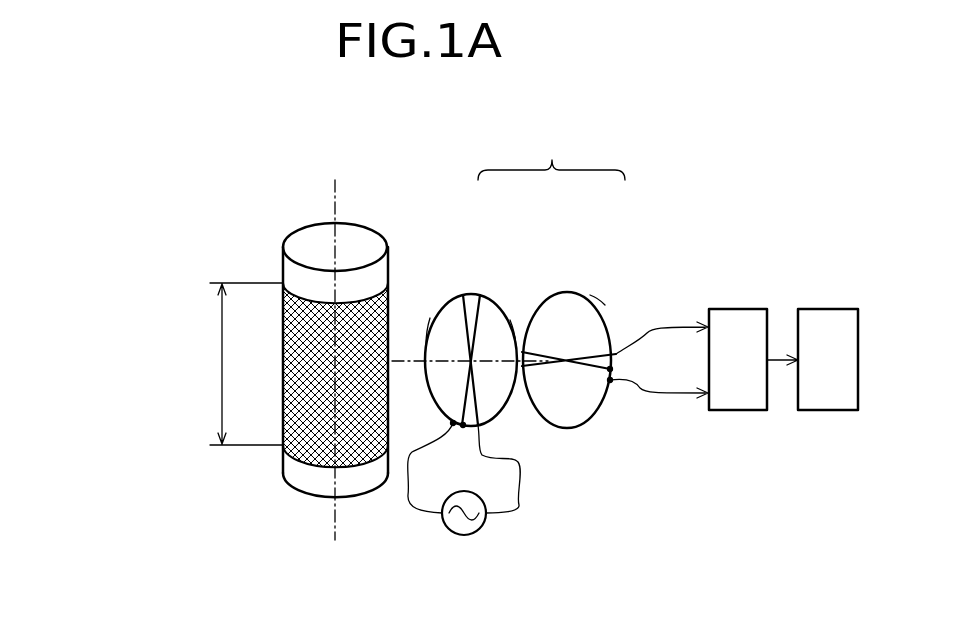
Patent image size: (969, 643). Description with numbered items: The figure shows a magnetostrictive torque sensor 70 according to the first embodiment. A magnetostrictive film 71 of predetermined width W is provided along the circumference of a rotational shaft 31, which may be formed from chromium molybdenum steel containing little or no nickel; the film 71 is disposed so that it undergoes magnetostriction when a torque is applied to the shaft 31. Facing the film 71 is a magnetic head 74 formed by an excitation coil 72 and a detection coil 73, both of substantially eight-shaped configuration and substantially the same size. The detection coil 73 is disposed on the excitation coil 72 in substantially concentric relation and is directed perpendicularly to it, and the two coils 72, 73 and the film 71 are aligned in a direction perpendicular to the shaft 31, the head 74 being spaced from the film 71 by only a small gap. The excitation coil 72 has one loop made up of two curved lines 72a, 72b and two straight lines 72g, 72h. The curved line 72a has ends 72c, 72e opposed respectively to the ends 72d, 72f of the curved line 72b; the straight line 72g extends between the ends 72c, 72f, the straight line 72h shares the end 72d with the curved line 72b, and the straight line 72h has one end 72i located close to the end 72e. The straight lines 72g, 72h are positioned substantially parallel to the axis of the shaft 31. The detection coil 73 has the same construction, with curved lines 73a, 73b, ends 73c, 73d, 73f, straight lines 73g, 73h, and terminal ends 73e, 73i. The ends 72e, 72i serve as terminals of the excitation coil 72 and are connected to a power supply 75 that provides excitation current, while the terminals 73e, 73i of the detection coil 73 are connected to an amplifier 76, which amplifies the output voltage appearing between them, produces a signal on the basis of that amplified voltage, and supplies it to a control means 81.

The magnetostrictive torque sensor 70 is at (253, 162).
The rotational shaft 31 is at (307, 243).
The magnetostrictive film 71 is at (318, 446).
The width W is at (234, 364).
The excitation coil 72 is at (500, 283).
The curved line 72a is at (431, 318).
The curved line 72b is at (506, 320).
The end 72c is at (463, 292).
The end 72d is at (480, 292).
The end 72e is at (453, 423).
The end 72f is at (479, 427).
The straight line 72g is at (460, 314).
The straight line 72h is at (481, 314).
The end 72i is at (463, 427).
The detection coil 73 is at (590, 280).
The curved line 73a is at (583, 425).
The curved line 73b is at (600, 298).
The end 73c is at (543, 367).
The end 73d is at (531, 350).
The end 73e is at (614, 381).
The end 73f is at (617, 351).
The straight line 73g is at (525, 368).
The straight line 73h is at (546, 352).
The end 73i is at (612, 369).
The magnetic head 74 is at (551, 152).
The power supply 75 is at (480, 530).
The amplifier 76 is at (737, 412).
The control means 81 is at (828, 412).